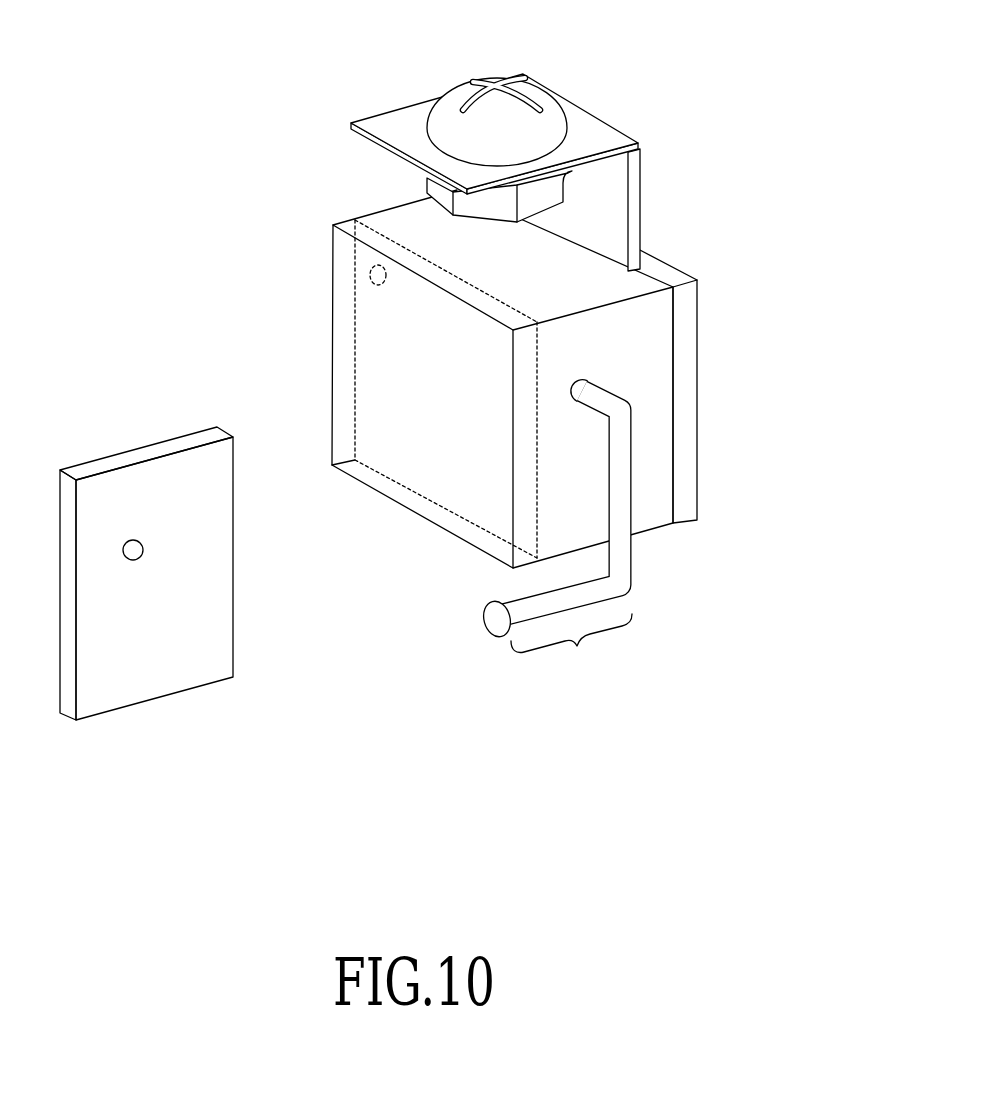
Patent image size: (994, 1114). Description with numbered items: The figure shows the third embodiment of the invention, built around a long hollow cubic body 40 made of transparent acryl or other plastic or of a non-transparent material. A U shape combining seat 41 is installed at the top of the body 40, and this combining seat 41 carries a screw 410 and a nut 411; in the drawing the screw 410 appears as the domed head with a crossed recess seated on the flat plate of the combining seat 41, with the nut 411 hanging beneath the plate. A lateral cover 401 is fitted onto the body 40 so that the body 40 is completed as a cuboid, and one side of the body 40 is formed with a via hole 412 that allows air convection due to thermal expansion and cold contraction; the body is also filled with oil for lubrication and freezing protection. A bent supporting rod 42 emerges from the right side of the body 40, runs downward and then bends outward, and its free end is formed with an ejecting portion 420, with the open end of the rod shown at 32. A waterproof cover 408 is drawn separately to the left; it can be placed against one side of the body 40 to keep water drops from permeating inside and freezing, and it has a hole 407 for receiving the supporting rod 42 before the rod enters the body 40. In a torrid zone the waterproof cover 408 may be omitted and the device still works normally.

The hollow cubic body 40 is at (393, 372).
The lateral cover 401 is at (687, 411).
The U shape combining seat 41 is at (585, 145).
The screw 410 is at (530, 90).
The nut 411 is at (460, 205).
The via hole 412 is at (375, 266).
The bent supporting rod 42 is at (622, 566).
The ejecting portion 420 is at (571, 646).
The tube end opening 32 is at (490, 624).
The waterproof cover 408 is at (155, 668).
The panel hole 407 is at (134, 553).